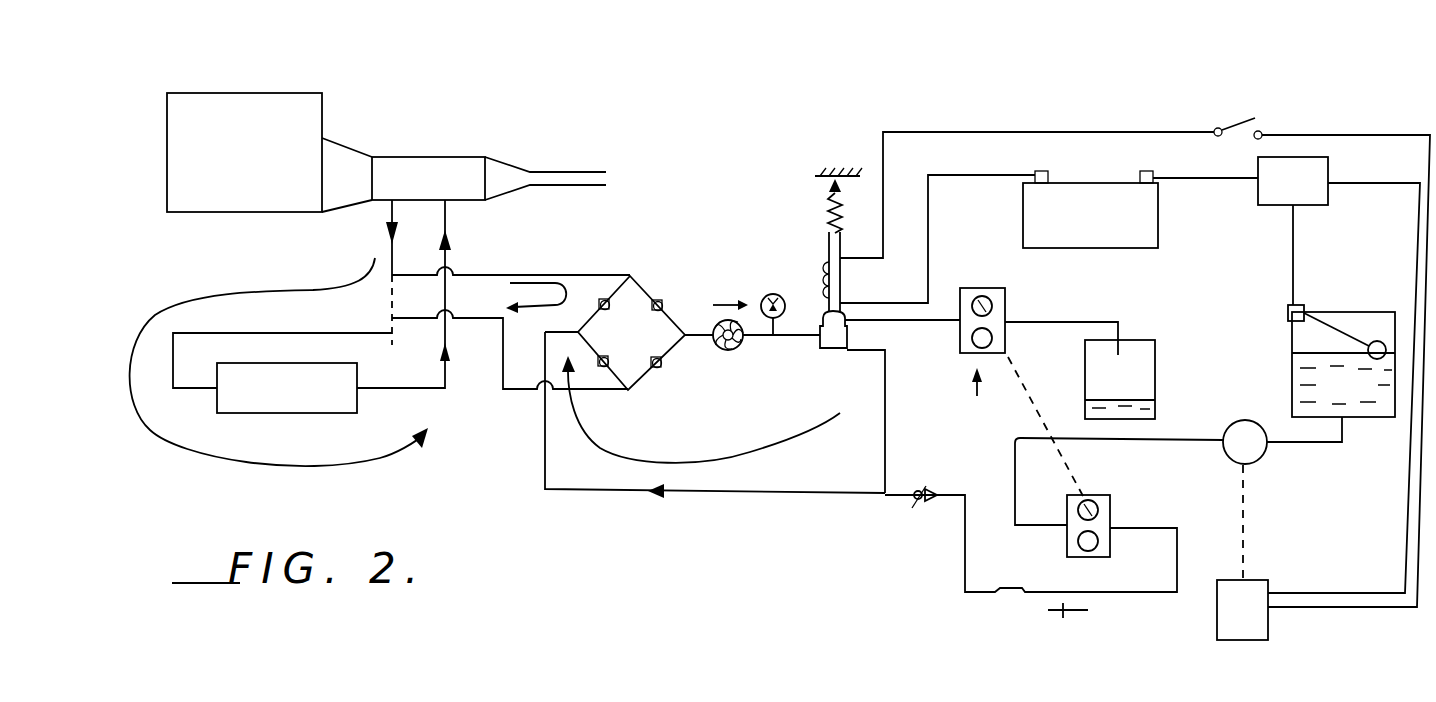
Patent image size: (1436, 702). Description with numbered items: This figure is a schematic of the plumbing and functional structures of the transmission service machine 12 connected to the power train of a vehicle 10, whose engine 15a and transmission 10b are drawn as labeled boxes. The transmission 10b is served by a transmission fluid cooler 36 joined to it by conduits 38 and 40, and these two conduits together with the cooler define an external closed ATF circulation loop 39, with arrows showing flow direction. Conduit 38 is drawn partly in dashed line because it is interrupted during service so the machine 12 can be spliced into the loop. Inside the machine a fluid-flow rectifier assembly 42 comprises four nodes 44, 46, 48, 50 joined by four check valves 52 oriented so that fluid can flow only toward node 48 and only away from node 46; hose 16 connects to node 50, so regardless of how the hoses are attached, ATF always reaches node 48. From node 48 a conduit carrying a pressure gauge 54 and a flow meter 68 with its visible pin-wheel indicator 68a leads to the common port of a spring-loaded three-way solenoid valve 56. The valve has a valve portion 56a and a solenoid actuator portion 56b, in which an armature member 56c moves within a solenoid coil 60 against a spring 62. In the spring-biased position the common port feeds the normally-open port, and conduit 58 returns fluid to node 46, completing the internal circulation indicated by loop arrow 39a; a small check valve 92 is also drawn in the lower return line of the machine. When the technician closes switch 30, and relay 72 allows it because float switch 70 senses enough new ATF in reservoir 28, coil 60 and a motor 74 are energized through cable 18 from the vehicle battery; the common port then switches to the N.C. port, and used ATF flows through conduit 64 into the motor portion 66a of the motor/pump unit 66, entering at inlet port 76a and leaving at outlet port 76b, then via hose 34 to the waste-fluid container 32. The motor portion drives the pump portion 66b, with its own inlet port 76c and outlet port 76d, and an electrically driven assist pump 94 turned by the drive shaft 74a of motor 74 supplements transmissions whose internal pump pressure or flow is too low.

The vehicle 10 is at (416, 60).
The transmission 10b is at (412, 153).
The engine 15a is at (244, 152).
The machine 12 is at (1030, 90).
The hose 16 is at (470, 322).
The cable 18 is at (965, 178).
The reservoir 28 is at (1292, 375).
The switch 30 is at (1251, 104).
The waste-fluid container 32 is at (1155, 381).
The hose 34 is at (1068, 324).
The transmission fluid cooler 36 is at (272, 405).
The conduit 38 is at (389, 216).
The external closed ATF circulation loop 39 is at (272, 476).
The loop arrow 39a is at (542, 276).
The conduit 40 is at (450, 218).
The fluid-flow rectifier assembly 42 is at (671, 250).
The node 44 is at (630, 273).
The node 46 is at (618, 331).
The node 48 is at (683, 340).
The node 50 is at (628, 392).
The check valves 52 is at (597, 292).
The pressure gauge 54 is at (770, 293).
The spring-loaded three-way solenoid valve 56 is at (803, 389).
The valve portion 56a is at (843, 382).
The solenoid actuator portion 56b is at (817, 128).
The armature member 56c is at (828, 244).
The conduit 58 is at (798, 332).
The solenoid coil 60 is at (842, 289).
The spring 62 is at (832, 198).
The conduit 64 is at (936, 316).
The motor/pump unit 66 is at (1040, 492).
The motor portion 66a is at (1008, 304).
The pump portion 66b is at (1114, 508).
The flow meter 68 is at (755, 348).
The indicator 68a is at (722, 358).
The float switch 70 is at (1287, 308).
The relay 72 is at (1322, 207).
The motor 74 is at (1255, 637).
The drive shaft 74a is at (1246, 520).
The inlet port 76a is at (1010, 334).
The outlet port 76b is at (953, 330).
The inlet port 76c is at (1112, 535).
The outlet port 76d is at (1062, 532).
The check valve 92 is at (918, 508).
The assist pump 94 is at (1258, 452).